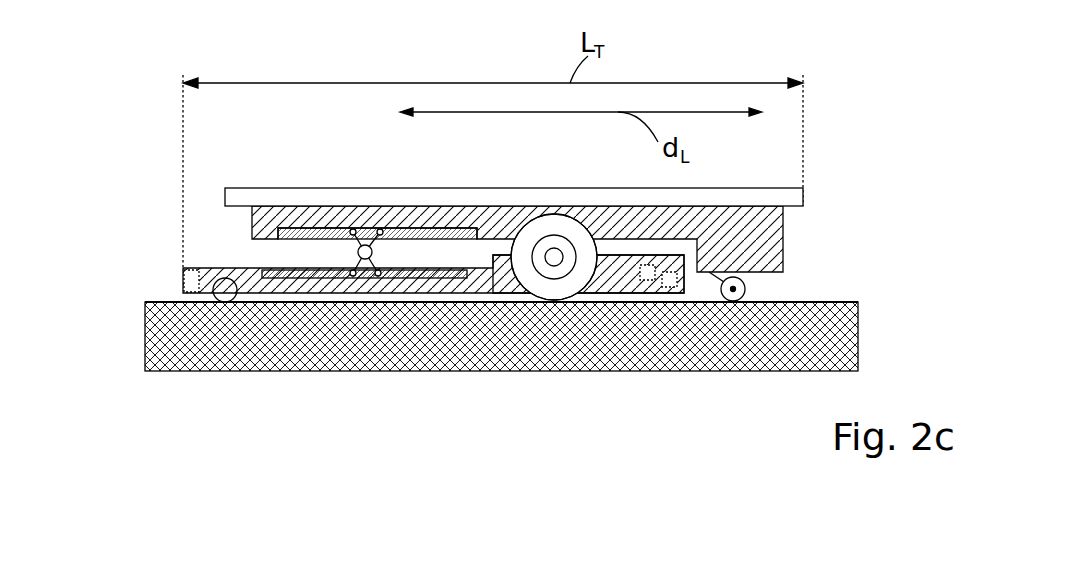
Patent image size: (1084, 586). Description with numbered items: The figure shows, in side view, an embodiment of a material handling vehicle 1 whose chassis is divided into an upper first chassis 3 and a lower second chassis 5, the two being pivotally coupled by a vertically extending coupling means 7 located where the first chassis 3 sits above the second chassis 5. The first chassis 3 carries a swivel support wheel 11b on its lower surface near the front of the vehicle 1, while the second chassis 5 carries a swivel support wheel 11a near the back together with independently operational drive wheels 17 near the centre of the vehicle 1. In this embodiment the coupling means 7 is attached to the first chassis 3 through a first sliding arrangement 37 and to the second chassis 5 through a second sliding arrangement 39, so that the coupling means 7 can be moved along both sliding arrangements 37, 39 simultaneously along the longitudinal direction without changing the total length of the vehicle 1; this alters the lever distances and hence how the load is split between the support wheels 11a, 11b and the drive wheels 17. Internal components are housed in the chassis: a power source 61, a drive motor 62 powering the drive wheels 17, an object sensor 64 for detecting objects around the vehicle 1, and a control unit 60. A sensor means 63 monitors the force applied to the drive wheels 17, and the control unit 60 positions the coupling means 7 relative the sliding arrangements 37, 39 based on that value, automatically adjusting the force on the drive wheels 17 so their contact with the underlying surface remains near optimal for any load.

The vehicle 1 is at (152, 185).
The first chassis 3 is at (783, 230).
The second chassis 5 is at (208, 285).
The coupling means 7 is at (378, 249).
The support wheel 11a is at (227, 299).
The support wheel 11b is at (737, 288).
The drive wheel 17 is at (545, 222).
The first sliding arrangement 37 is at (283, 235).
The second sliding arrangement 39 is at (279, 271).
The control unit 60 is at (649, 281).
The power source 61 is at (672, 288).
The drive motor 62 is at (531, 309).
The sensor means 63 is at (500, 289).
The object sensor 64 is at (183, 282).